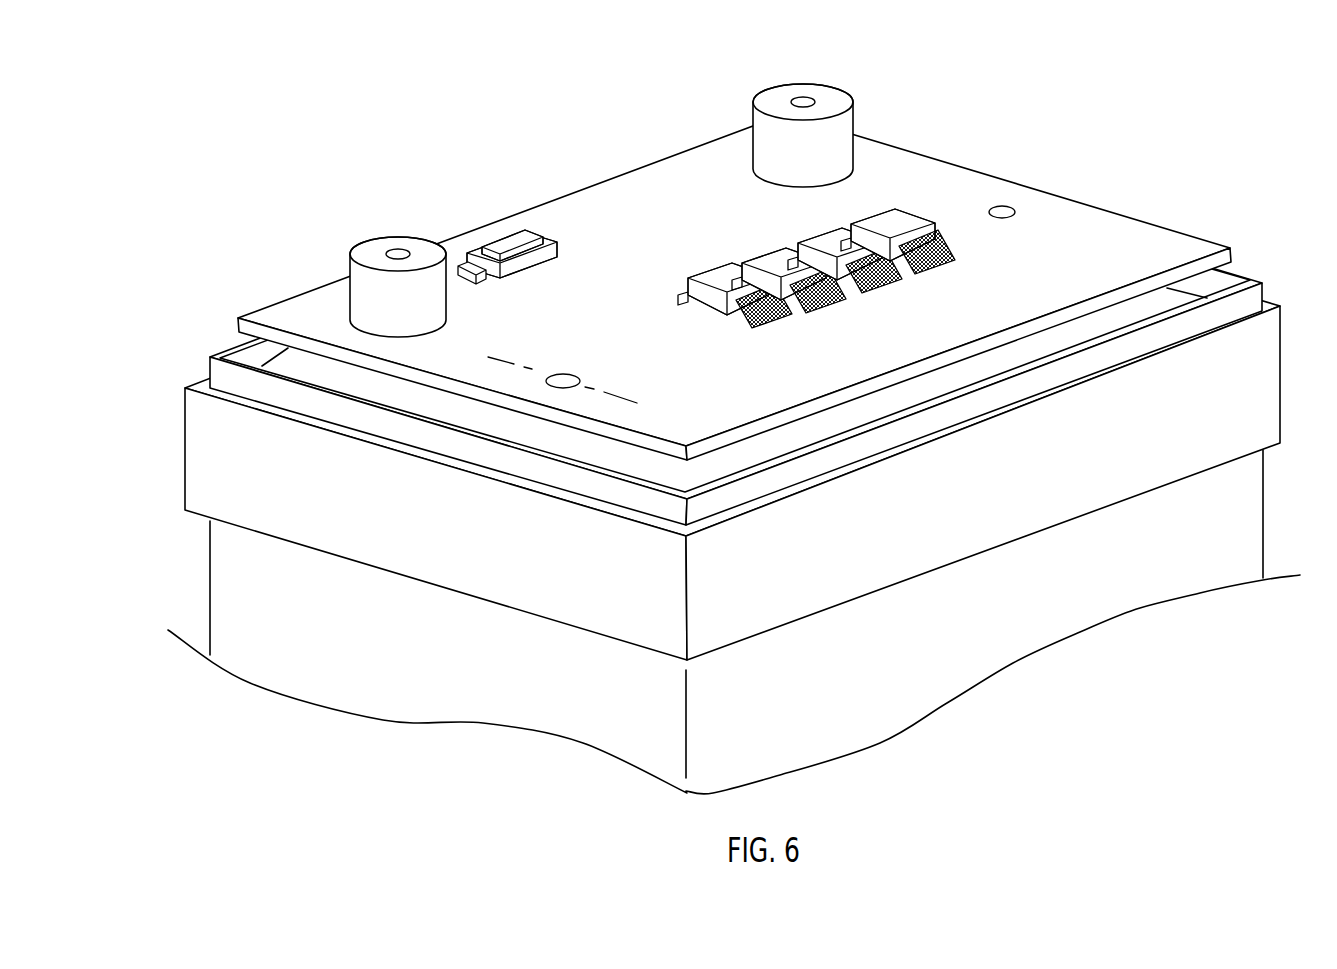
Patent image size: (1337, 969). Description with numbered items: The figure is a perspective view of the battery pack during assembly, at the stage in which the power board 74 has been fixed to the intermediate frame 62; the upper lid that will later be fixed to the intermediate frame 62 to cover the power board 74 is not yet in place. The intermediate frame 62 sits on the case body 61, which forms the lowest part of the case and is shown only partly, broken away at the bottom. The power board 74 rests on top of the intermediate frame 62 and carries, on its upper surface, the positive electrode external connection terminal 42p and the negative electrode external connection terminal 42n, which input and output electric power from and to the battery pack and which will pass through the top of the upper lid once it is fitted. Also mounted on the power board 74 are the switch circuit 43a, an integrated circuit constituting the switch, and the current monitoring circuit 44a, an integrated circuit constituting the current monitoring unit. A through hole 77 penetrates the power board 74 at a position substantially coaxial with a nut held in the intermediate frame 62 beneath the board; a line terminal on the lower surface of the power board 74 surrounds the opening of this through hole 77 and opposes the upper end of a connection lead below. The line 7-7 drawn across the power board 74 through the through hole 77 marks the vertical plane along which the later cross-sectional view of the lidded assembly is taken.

The case body 61 is at (207, 592).
The intermediate frame 62 is at (200, 447).
The power board 74 is at (317, 308).
The through hole 77 is at (565, 375).
The line 7- 7 is at (488, 357).
The negative electrode external connection terminal 42n is at (373, 253).
The positive electrode external connection terminal 42p is at (773, 100).
The switch circuit 43a is at (507, 240).
The current monitoring circuit 44a is at (720, 280).